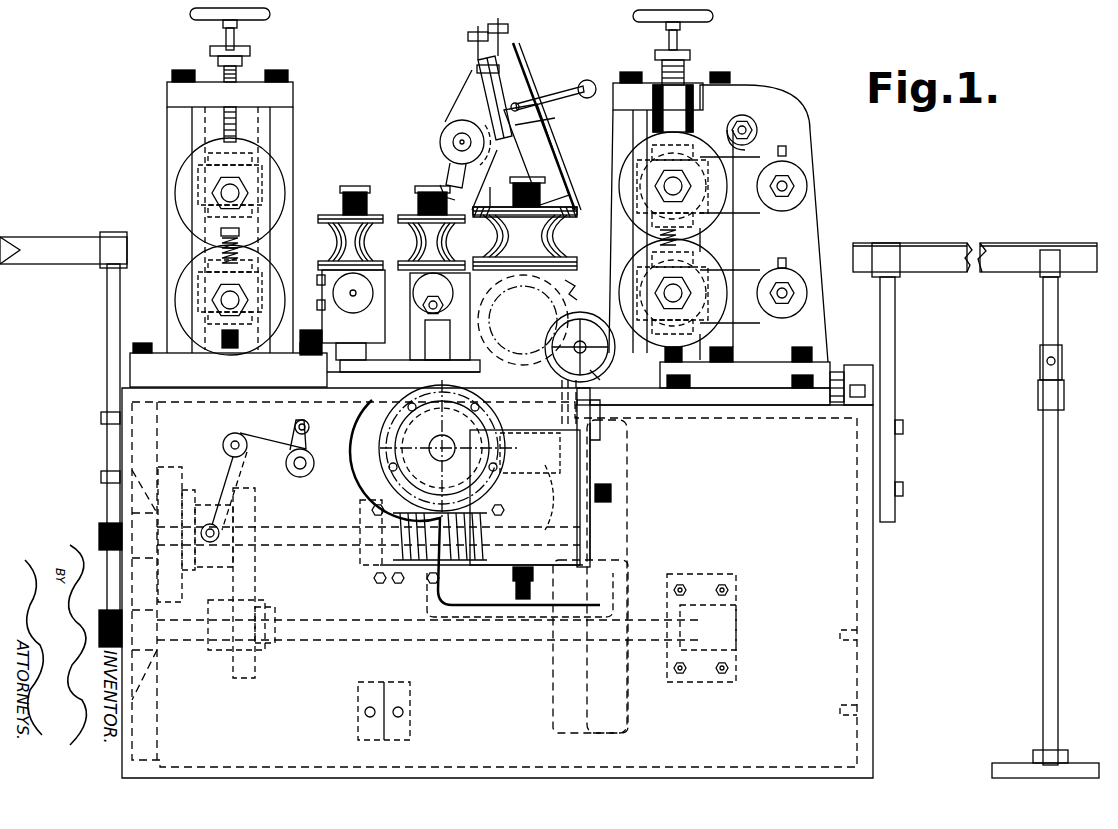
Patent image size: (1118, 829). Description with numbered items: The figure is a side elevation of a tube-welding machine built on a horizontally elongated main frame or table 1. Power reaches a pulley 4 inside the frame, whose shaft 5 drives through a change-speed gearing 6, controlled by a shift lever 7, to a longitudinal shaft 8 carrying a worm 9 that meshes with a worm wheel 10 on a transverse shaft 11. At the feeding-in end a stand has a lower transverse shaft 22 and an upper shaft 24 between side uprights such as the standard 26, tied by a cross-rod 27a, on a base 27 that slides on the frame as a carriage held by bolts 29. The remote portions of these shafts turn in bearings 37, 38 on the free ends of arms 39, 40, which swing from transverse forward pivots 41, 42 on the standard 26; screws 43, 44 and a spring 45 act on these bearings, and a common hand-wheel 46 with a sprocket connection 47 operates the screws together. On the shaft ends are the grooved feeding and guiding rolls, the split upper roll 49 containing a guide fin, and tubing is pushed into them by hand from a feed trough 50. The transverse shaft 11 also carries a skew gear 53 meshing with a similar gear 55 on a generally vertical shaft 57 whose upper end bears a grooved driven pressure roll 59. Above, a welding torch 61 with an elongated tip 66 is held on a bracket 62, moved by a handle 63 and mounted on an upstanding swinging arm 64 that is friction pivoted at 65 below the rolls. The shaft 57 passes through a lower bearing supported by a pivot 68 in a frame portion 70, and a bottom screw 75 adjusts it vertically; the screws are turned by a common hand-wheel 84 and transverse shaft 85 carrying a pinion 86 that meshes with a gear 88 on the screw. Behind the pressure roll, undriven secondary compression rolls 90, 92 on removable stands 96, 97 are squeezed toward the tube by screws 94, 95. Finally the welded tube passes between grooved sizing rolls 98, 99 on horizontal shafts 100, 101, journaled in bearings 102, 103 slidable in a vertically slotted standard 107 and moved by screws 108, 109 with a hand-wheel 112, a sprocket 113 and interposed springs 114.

The main frame 1 is at (878, 410).
The pulley 4 is at (553, 700).
The shaft 5 is at (435, 642).
The change-speed gearing 6 is at (256, 579).
The shift lever 7 is at (265, 462).
The longitudinal shaft 8 is at (330, 548).
The worm 9 is at (425, 572).
The worm wheel 10 is at (500, 410).
The transverse shaft 11 is at (441, 436).
The transverse shaft 22 is at (668, 300).
The upper shaft 24 is at (676, 193).
The side upright 26 is at (796, 135).
The base 27 is at (770, 405).
The cross-rod 27a is at (752, 118).
The bolts 29 is at (690, 383).
The bearing 37 is at (581, 284).
The bearing 38 is at (612, 165).
The arm 39 is at (742, 270).
The arm 40 is at (756, 158).
The transverse forward pivot 41 is at (786, 293).
The transverse forward pivot 42 is at (786, 186).
The screw 43 is at (682, 75).
The screw 44 is at (690, 358).
The spring 45 is at (568, 238).
The hand-wheel 46 is at (714, 16).
The sprocket connection 47 is at (655, 53).
The upper roll 49 is at (692, 152).
The feed trough 50 is at (933, 242).
The spiral gear 53 is at (380, 450).
The spiral gear 55 is at (590, 448).
The vertical shaft 57 is at (521, 180).
The pressure roll 59 is at (487, 187).
The welding torch 61 is at (535, 135).
The bracket 62 is at (480, 92).
The handle 63 is at (566, 85).
The swinging arm 64 is at (438, 185).
The friction pivot 65 is at (415, 302).
The torch tip 66 is at (568, 189).
The pivot 68 is at (611, 495).
The frame portion 70 is at (580, 520).
The bottom screw 75 is at (524, 600).
The hand-wheel 84 is at (560, 368).
The transverse shaft 85 is at (600, 380).
The pinion 86 is at (572, 385).
The gear 88 is at (560, 297).
The secondary compression roll 90 is at (430, 265).
The secondary compression roll 92 is at (322, 243).
The screw 94 is at (455, 290).
The screw 95 is at (330, 258).
The removable stand 96 is at (445, 331).
The removable stand 97 is at (345, 328).
The sizing roll 98 is at (180, 301).
The sizing roll 99 is at (185, 176).
The horizontal shaft 100 is at (227, 302).
The horizontal shaft 101 is at (232, 191).
The bearing 102 is at (191, 304).
The bearing 103 is at (205, 201).
The slotted standard 107 is at (170, 119).
The upper screw 108 is at (245, 125).
The lower screw 109 is at (258, 365).
The hand-wheel 112 is at (270, 15).
The sprocket 113 is at (250, 50).
The springs 114 is at (192, 240).